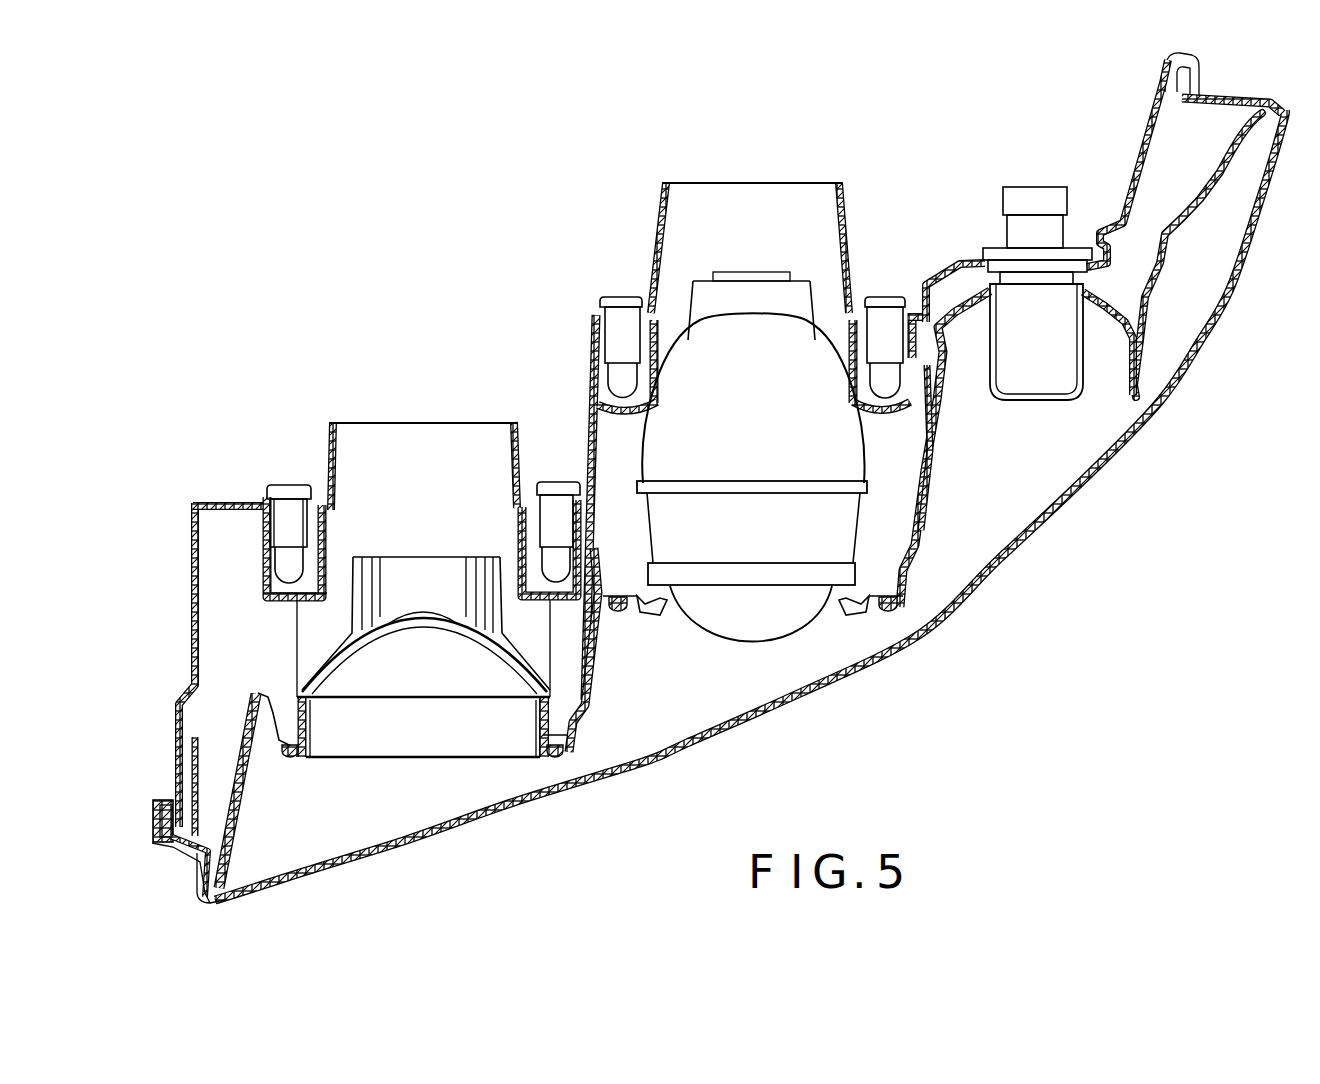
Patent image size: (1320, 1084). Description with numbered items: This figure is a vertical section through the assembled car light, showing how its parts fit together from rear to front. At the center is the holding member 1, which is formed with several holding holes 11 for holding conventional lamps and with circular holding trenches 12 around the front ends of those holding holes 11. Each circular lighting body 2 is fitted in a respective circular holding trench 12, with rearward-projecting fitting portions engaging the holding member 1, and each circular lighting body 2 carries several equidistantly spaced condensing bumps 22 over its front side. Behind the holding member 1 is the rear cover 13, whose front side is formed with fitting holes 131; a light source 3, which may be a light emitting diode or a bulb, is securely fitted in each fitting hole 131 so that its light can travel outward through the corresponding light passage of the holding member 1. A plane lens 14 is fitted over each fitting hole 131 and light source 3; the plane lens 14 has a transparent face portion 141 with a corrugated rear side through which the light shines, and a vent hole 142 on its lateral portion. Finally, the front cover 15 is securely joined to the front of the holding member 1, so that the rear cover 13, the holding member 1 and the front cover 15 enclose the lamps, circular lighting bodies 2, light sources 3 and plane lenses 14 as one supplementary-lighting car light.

The holding member 1 is at (253, 813).
The holding hole 11 is at (398, 453).
The circular holding trench 12 is at (310, 757).
The rear cover 13 is at (193, 628).
The fitting hole 131 is at (297, 562).
The plane lens 14 is at (305, 560).
The transparent face portion 141 is at (270, 577).
The vent hole 142 is at (267, 560).
The front cover 15 is at (840, 677).
The circular lighting body 2 is at (287, 757).
The condensing bump 22 is at (553, 760).
The light source 3 is at (263, 566).